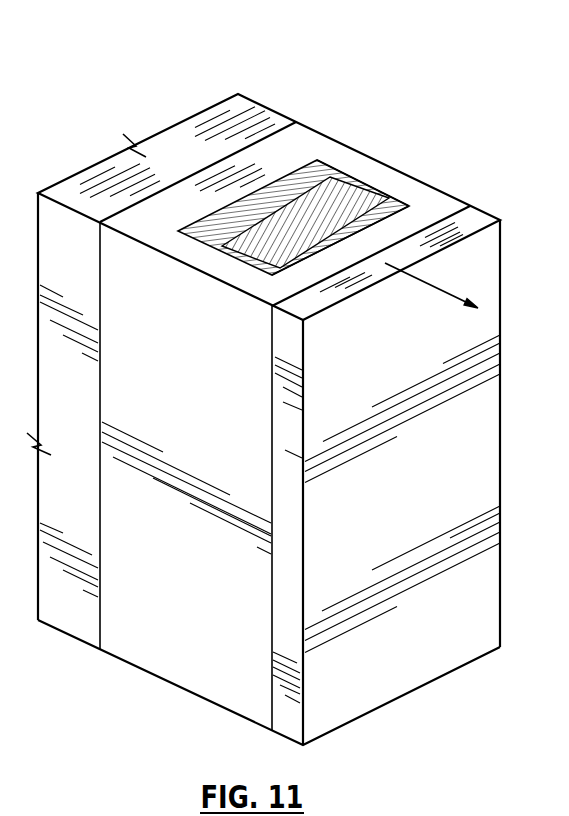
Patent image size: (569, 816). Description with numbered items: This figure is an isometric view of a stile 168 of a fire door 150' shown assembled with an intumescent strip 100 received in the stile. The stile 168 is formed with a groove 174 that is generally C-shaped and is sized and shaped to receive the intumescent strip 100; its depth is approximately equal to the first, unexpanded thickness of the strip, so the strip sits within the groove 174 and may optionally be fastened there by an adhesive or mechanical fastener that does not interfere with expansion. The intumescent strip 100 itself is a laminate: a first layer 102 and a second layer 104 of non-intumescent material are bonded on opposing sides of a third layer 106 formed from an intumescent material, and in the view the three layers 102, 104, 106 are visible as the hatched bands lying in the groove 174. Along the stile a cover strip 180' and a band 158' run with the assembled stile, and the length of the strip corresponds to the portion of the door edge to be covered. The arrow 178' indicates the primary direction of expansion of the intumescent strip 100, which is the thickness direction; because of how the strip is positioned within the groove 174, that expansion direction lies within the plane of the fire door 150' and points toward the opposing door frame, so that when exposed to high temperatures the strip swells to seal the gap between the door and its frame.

The fire door 150' is at (263, 379).
The raised strip 158' is at (193, 339).
The intumescent strip 100 is at (350, 160).
The first layer 102 is at (210, 230).
The second layer 104 is at (297, 277).
The third layer 106 is at (258, 253).
The stile 168 is at (388, 165).
The groove 174 is at (412, 195).
The arrow 178' is at (418, 319).
The cover strip 180' is at (402, 546).